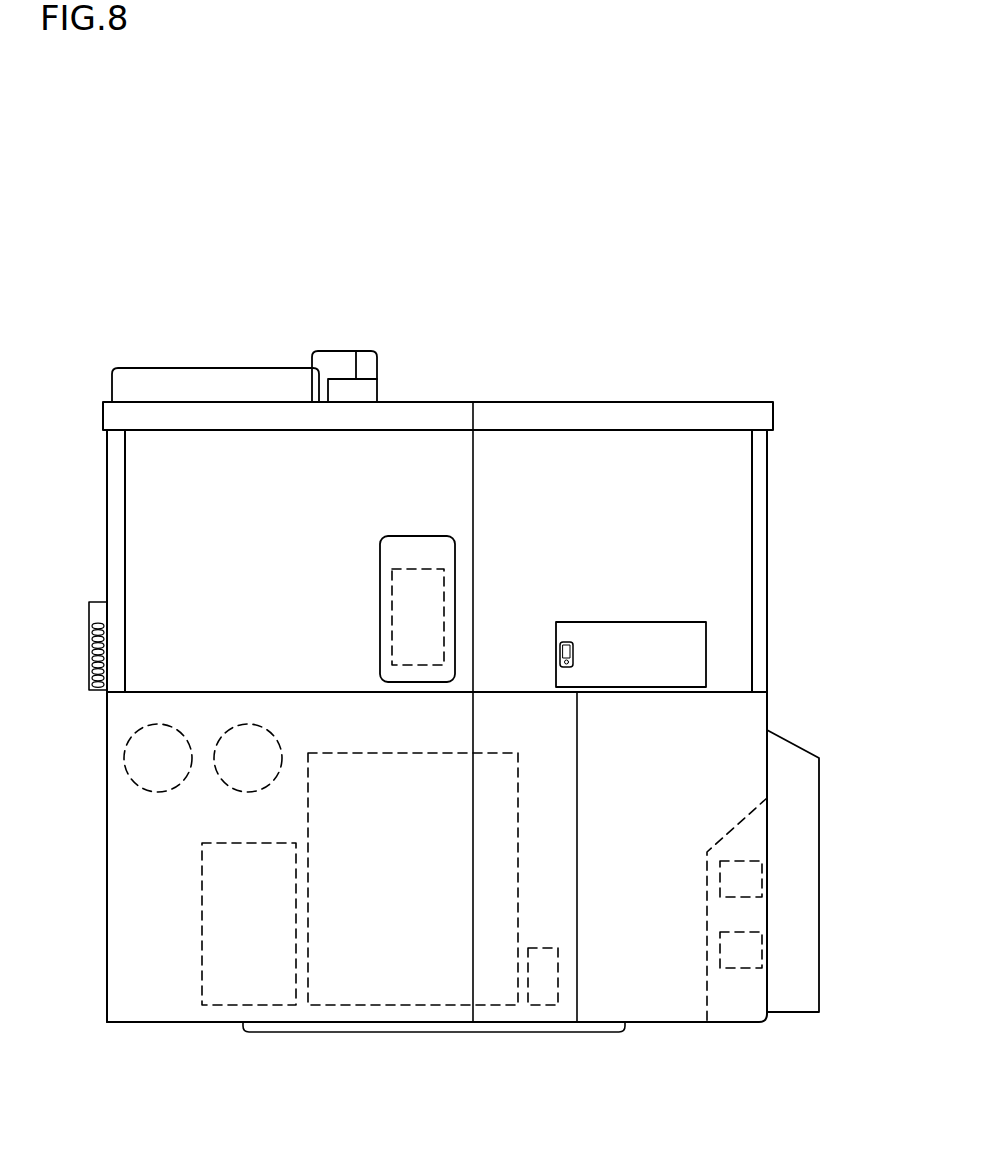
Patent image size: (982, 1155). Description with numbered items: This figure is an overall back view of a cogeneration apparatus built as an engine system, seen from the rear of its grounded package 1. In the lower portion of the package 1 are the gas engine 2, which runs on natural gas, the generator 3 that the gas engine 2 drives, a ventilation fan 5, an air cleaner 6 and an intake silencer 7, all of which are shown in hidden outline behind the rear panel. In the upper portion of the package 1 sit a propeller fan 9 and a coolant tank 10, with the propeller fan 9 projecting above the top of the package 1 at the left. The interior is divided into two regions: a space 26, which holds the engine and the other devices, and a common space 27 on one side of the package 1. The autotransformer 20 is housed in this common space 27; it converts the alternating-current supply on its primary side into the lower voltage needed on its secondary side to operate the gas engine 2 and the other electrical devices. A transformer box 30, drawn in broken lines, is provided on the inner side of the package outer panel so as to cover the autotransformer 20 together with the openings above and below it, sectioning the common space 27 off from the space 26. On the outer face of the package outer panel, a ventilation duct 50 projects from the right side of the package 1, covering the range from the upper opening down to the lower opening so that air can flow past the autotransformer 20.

The package 1 is at (779, 597).
The gas engine 2 is at (405, 995).
The generator 3 is at (232, 995).
The ventilation fan 5 is at (543, 995).
The air cleaner 6 is at (157, 758).
The intake silencer 7 is at (250, 757).
The propeller fan 9 is at (216, 378).
The coolant tank 10 is at (417, 602).
The autotransformer 20 is at (740, 875).
The space 26 is at (407, 731).
The common space 27 is at (737, 995).
The transformer box 30 is at (705, 885).
The ventilation duct 50 is at (800, 940).